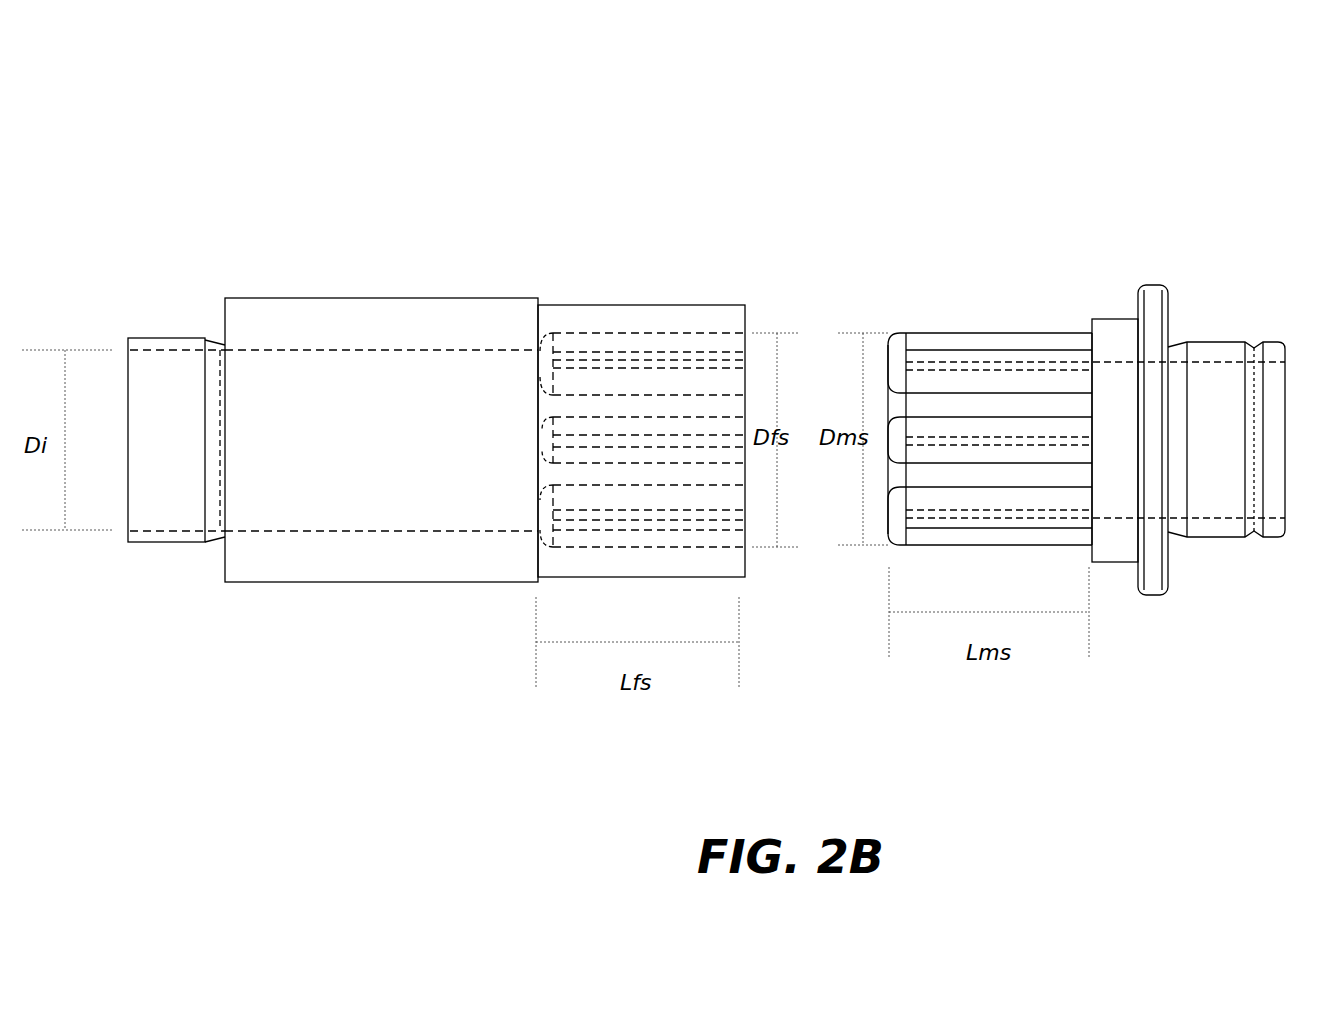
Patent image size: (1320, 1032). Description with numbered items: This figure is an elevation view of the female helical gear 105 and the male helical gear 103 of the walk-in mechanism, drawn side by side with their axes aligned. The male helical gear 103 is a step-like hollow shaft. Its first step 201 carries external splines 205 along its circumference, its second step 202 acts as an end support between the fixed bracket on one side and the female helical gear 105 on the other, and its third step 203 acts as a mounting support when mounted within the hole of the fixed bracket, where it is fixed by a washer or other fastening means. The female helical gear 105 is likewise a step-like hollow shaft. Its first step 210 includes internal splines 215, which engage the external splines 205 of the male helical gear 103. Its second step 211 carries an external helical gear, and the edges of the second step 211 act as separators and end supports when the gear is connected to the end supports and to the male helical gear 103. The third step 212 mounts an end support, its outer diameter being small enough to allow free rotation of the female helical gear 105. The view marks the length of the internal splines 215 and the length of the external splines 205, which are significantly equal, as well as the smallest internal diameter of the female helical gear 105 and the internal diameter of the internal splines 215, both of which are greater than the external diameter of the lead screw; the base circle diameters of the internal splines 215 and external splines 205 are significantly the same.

The male helical gear 103 is at (1228, 162).
The female helical gear 105 is at (391, 198).
The first step 201 is at (933, 325).
The second step 202 is at (1147, 286).
The third step 203 is at (1237, 341).
The external splines 205 is at (997, 336).
The first step 210 is at (605, 304).
The second step 211 is at (292, 298).
The third step 212 is at (163, 338).
The internal splines 215 is at (723, 343).